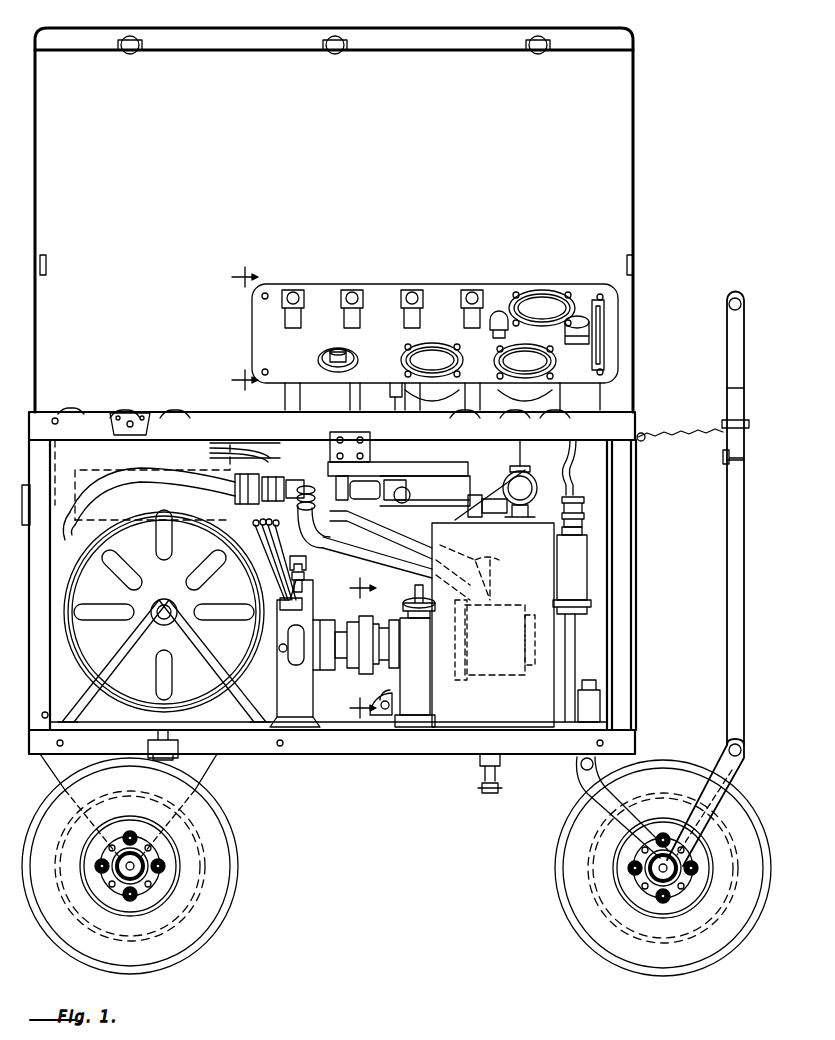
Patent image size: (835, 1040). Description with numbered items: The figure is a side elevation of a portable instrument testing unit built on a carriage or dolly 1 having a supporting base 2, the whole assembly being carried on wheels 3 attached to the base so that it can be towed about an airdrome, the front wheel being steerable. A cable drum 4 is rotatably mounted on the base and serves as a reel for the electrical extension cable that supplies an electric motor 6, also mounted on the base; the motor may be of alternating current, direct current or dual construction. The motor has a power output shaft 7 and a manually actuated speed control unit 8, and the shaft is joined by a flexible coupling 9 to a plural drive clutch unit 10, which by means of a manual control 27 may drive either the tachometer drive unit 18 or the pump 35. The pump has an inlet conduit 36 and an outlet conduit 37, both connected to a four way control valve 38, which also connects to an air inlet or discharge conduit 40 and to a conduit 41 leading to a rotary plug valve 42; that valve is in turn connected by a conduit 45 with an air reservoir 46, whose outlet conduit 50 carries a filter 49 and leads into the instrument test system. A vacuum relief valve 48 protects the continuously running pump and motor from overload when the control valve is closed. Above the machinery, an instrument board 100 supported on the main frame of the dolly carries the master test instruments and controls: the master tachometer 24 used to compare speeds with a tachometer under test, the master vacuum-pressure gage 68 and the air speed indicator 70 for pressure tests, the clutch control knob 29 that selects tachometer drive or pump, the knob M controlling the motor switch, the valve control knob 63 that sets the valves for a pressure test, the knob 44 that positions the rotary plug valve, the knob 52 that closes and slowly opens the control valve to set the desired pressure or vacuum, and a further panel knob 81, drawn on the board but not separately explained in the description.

The carriage or dolly 1 is at (636, 626).
The supporting base 2 is at (333, 774).
The wheels 3 is at (233, 886).
The cable drum 4 is at (75, 656).
The electric motor 6 is at (300, 690).
The power output shaft 7 is at (325, 672).
The speed control unit 8 is at (308, 578).
The flexible coupling 9 is at (364, 620).
The plural drive clutch unit 10 is at (415, 672).
The tachometer drive unit 18 is at (370, 692).
The master tachometer 24 is at (535, 290).
The manual control 27 is at (403, 590).
The clutch control knob 29 is at (415, 286).
The pump 35 is at (480, 680).
The inlet conduit 36 is at (364, 564).
The outlet conduit 37 is at (382, 518).
The four way control valve 38 is at (296, 462).
The air inlet or discharge conduit 40 is at (158, 486).
The conduit 41 is at (338, 522).
The rotary plug valve 42 is at (399, 469).
The knob 44 is at (355, 286).
The conduit 45 is at (460, 512).
The air reservoir 46 is at (478, 598).
The vacuum relief valve 48 is at (538, 484).
The filter 49 is at (578, 572).
The outlet conduit 50 is at (577, 484).
The knob 52 is at (577, 344).
The valve control knob 63 is at (296, 286).
The master vacuum-pressure gage 68 is at (428, 342).
The air speed indicator 70 is at (552, 370).
The control knob 81 is at (348, 348).
The instrument board 100 is at (253, 332).
The switch control knob M is at (475, 286).